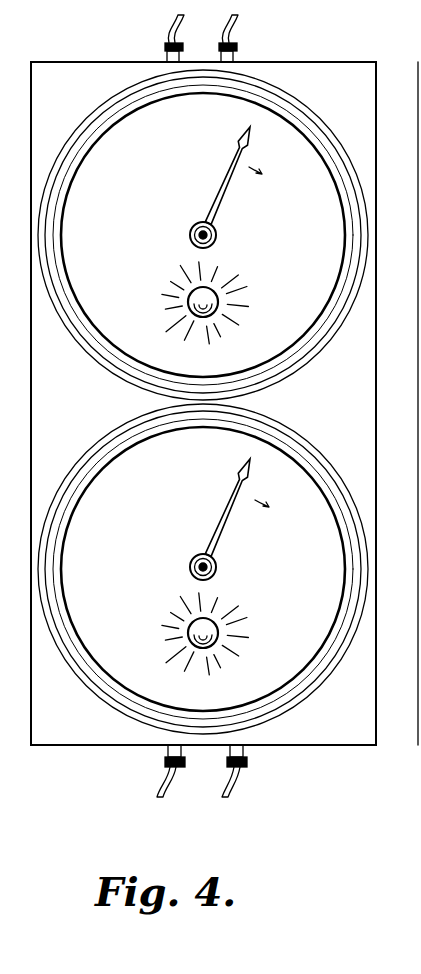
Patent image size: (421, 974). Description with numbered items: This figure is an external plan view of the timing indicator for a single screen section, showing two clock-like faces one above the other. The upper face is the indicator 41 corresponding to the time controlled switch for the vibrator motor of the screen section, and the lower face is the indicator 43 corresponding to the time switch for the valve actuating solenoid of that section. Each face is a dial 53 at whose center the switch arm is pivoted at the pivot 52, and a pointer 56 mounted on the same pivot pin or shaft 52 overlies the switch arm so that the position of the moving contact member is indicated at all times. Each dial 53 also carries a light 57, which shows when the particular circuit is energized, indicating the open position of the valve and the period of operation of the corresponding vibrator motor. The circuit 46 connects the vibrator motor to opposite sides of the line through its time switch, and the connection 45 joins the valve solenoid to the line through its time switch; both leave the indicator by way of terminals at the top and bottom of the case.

The indicator 41 is at (280, 348).
The indicator 43 is at (185, 554).
The connection 45 is at (176, 779).
The circuit 46 is at (178, 37).
The pivot 52 is at (191, 229).
The dial 53 is at (198, 402).
The pointer 56 is at (226, 184).
The light 57 is at (186, 300).